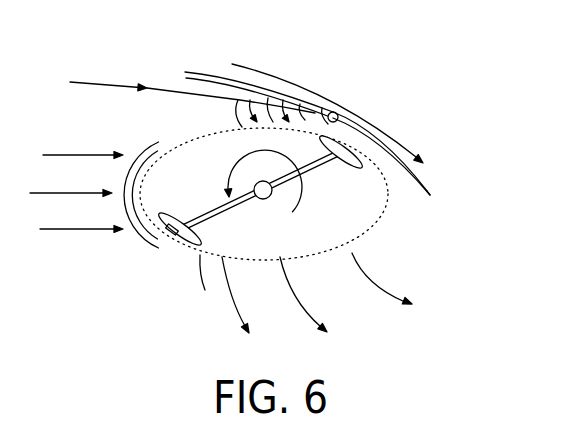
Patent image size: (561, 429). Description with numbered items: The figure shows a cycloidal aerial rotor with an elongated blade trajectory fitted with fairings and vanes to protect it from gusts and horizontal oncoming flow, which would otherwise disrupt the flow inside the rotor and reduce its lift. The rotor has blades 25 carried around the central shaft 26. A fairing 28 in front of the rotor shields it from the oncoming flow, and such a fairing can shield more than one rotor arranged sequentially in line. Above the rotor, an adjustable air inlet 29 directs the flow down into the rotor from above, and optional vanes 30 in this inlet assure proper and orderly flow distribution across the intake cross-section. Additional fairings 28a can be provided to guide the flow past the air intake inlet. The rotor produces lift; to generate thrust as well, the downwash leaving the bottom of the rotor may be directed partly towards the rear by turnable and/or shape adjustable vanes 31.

The blade 25 is at (354, 148).
The central shaft 26 is at (258, 182).
The fairing 28 is at (143, 240).
The fairings 28a is at (430, 193).
The adjustable air inlet 29 is at (254, 84).
The vanes 30 is at (209, 126).
The vanes 31 is at (207, 291).